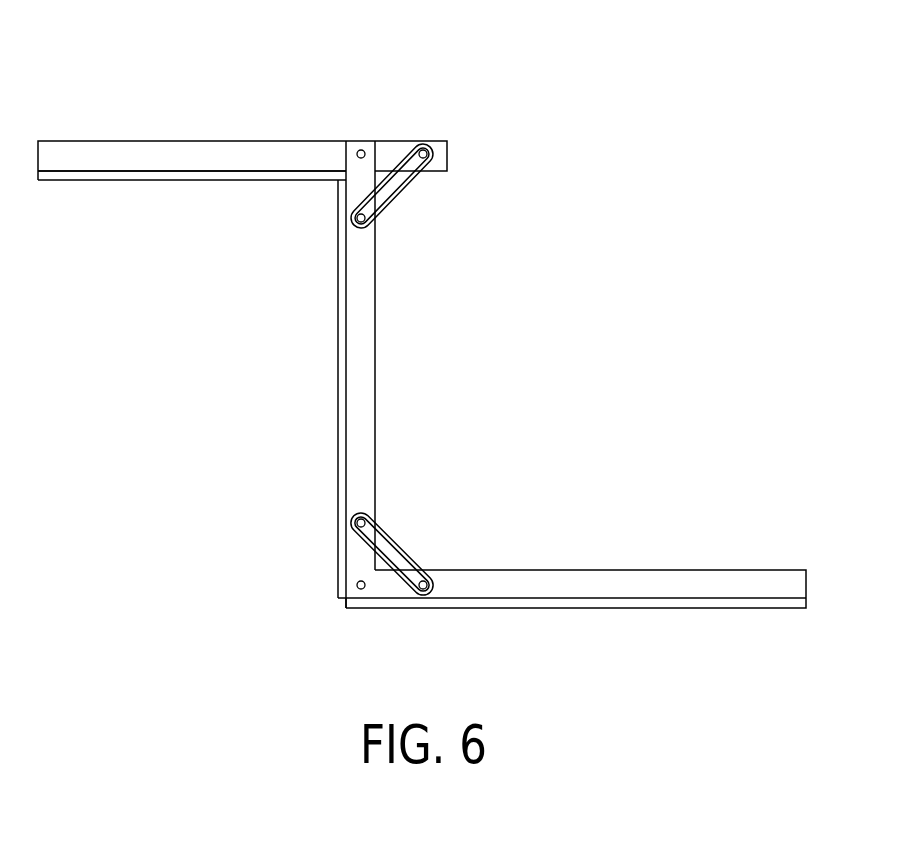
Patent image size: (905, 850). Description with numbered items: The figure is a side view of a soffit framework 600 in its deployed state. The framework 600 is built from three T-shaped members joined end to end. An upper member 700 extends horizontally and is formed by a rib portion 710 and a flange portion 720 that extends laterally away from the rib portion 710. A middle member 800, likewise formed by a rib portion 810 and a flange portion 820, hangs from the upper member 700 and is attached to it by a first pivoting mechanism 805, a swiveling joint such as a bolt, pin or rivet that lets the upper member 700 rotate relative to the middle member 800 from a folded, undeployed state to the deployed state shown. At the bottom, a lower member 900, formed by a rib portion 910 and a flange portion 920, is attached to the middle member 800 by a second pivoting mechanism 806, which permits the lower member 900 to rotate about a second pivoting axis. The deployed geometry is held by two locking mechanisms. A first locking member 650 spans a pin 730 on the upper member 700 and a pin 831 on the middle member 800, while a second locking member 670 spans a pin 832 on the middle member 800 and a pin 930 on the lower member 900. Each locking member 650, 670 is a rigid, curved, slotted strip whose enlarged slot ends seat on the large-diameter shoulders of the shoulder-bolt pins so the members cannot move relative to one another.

The framework 600 is at (593, 168).
The upper member 700 is at (203, 157).
The rib portion 710 is at (88, 157).
The flange portion 720 is at (105, 175).
The pin 730 is at (428, 151).
The middle member 800 is at (365, 345).
The rib portion 810 is at (365, 385).
The flange portion 820 is at (340, 412).
The first pivoting mechanism 805 is at (361, 149).
The second pivoting mechanism 806 is at (356, 585).
The pin 831 is at (359, 223).
The pin 832 is at (357, 522).
The first locking member 650 is at (393, 197).
The second locking member 670 is at (402, 550).
The lower member 900 is at (617, 588).
The rib portion 910 is at (517, 582).
The flange portion 920 is at (642, 602).
The pin 930 is at (423, 591).